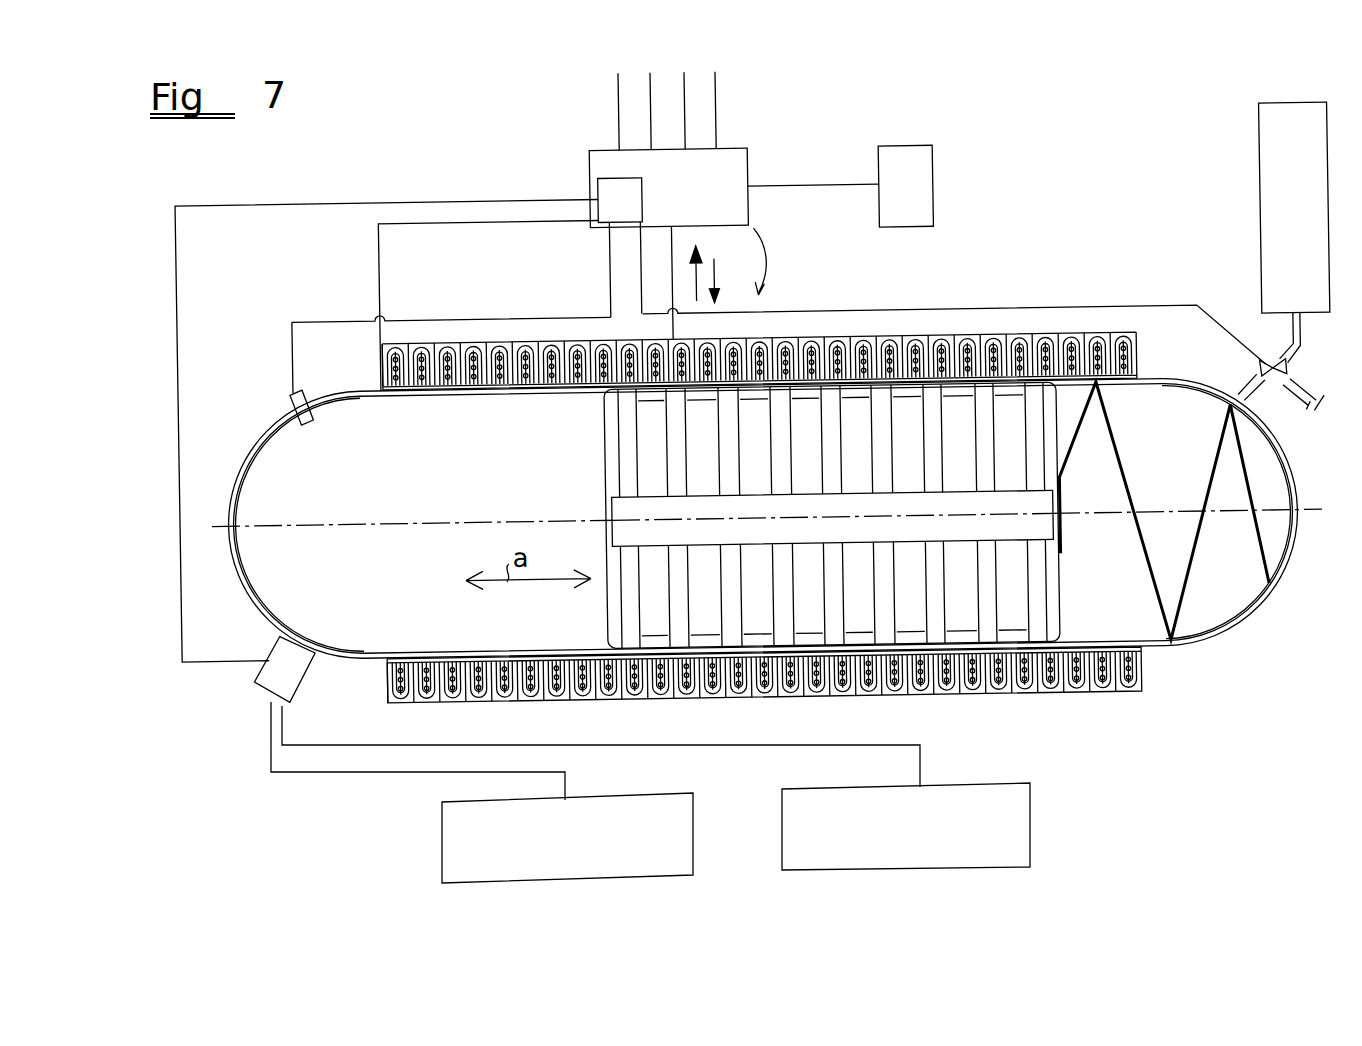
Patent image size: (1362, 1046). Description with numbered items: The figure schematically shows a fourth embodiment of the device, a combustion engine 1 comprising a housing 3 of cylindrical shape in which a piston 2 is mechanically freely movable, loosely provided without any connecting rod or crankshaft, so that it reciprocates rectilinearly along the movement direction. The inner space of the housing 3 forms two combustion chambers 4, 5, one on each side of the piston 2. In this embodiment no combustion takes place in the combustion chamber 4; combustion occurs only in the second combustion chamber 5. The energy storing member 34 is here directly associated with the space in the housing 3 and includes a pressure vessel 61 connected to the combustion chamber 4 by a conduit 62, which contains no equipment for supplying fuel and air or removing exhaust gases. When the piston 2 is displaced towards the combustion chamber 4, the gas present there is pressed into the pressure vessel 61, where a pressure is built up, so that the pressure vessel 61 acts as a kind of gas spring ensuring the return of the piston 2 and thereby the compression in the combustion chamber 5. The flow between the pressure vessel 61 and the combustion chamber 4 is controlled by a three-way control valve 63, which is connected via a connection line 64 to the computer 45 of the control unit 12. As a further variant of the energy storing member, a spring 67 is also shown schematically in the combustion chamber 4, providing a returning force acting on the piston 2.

The combustion engine 1 is at (1100, 196).
The piston 2 is at (605, 466).
The housing 3 is at (1247, 614).
The combustion chamber 4 is at (1120, 585).
The combustion chamber 5 is at (456, 500).
The control unit 12 is at (738, 157).
The energy storing member 34 is at (912, 158).
The computer 45 is at (610, 187).
The pressure vessel 61 is at (1265, 210).
The conduit 62 is at (1304, 356).
The three-way control valve 63 is at (1262, 372).
The connection line 64 is at (973, 312).
The spring 67 is at (1127, 483).